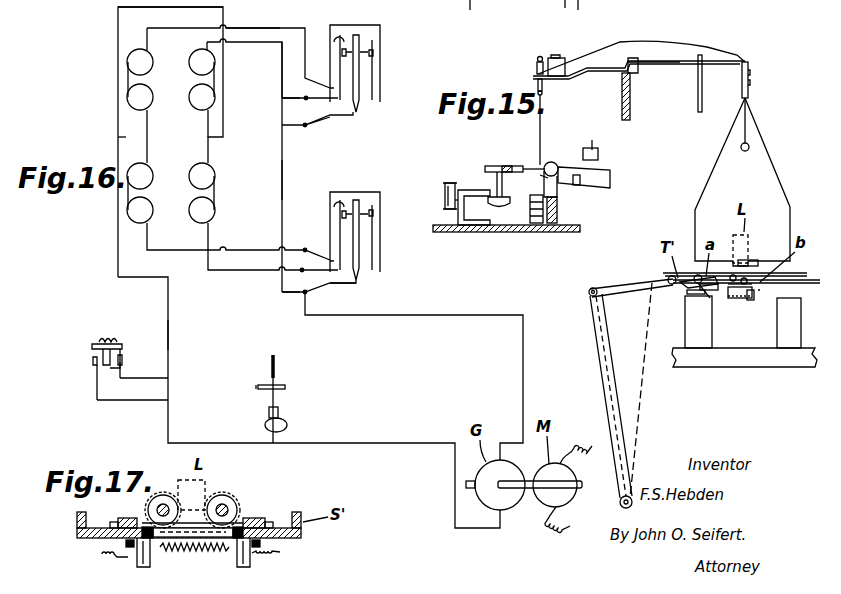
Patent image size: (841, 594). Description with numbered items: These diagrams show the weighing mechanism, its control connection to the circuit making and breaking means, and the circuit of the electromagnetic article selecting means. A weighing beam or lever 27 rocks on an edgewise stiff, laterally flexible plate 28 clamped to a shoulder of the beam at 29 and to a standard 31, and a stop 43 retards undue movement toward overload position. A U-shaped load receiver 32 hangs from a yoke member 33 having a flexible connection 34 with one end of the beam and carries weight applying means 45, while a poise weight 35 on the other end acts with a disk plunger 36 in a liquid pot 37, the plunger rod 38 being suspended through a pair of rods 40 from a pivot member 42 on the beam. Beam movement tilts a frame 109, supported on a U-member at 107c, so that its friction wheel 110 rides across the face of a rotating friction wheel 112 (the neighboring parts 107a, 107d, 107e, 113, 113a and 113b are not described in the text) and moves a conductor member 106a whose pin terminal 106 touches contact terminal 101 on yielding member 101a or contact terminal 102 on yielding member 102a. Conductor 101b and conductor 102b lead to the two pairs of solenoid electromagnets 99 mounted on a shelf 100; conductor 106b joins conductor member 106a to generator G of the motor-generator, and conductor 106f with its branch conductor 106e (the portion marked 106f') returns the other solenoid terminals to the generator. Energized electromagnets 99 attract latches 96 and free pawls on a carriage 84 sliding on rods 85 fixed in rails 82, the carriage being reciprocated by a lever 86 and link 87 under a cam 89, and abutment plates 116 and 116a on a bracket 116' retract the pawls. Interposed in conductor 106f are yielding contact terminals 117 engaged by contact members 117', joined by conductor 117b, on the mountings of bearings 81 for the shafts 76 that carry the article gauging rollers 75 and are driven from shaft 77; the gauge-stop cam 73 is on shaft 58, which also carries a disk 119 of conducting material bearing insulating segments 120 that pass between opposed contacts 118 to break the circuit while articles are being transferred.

In FIG. 16, the electromagnets 99 is at (177, 70).
In FIG. 15, the electromagnets 99 is at (777, 330).
In FIG. 16, the conductor 106f' is at (170, 18).
In FIG. 16, the branch conductor 106e is at (126, 137).
In FIG. 16, the abutment plate 116a is at (253, 15).
In FIG. 15, the abutment plate 116a is at (700, 325).
In FIG. 16, the conductor 102b is at (296, 30).
In FIG. 16, the contact terminal pin 106 is at (362, 42).
In FIG. 16, the contact terminal 101 is at (337, 52).
In FIG. 16, the contact terminal 102 is at (376, 50).
In FIG. 16, the yielding conducting member 102a is at (378, 64).
In FIG. 16, the conductor member 106a is at (358, 90).
In FIG. 16, the yielding conducting member 101a is at (338, 56).
In FIG. 16, the conductor 101b is at (282, 84).
In FIG. 16, the conductor 106b is at (290, 178).
In FIG. 17, the conductor 106b is at (100, 550).
In FIG. 16, the conductor 106f is at (196, 335).
In FIG. 16, the conductor 117b is at (112, 334).
In FIG. 17, the conductor 117b is at (178, 556).
In FIG. 16, the contact members 117' is at (99, 343).
In FIG. 17, the contact members 117' is at (181, 504).
In FIG. 16, the yielding contact terminals 117 is at (99, 361).
In FIG. 17, the yielding contact terminals 117 is at (189, 556).
In FIG. 16, the insulating segments 120 is at (279, 358).
In FIG. 16, the contact maker disk 119 is at (280, 390).
In FIG. 16, the opposed contacts 118 is at (280, 418).
In FIG. 16, the shaft 58 is at (256, 388).
In FIG. 17, the rollers 75 is at (160, 495).
In FIG. 17, the vertical shafts 76 is at (165, 502).
In FIG. 17, the bearings 81 is at (148, 503).
In FIG. 15, the cam 73 is at (458, 11).
In FIG. 15, the rails 82 is at (540, 11).
In FIG. 15, the shaft 77 is at (589, 11).
In FIG. 15, the weighing beam 27 is at (625, 45).
In FIG. 15, the flexible plate 28 is at (640, 76).
In FIG. 15, the beam shoulder clamp 29 is at (632, 58).
In FIG. 15, the poise weight 35 is at (550, 55).
In FIG. 15, the pivot member 42 is at (534, 72).
In FIG. 15, the standard 31 is at (632, 100).
In FIG. 15, the stop 43 is at (703, 90).
In FIG. 15, the flexible connection 34 is at (750, 74).
In FIG. 15, the weight applying means 45 is at (750, 146).
In FIG. 15, the yoke member 33 is at (708, 180).
In FIG. 15, the load receiver 32 is at (753, 262).
In FIG. 15, the rods 40 is at (538, 137).
In FIG. 15, the rods 85 is at (742, 288).
In FIG. 15, the link 87 is at (622, 284).
In FIG. 15, the lever 86 is at (640, 388).
In FIG. 15, the cam 89 is at (648, 438).
In FIG. 15, the carriage 84 is at (684, 274).
In FIG. 15, the abutment plate 116 is at (787, 276).
In FIG. 15, the latches 96 is at (704, 300).
In FIG. 15, the bracket 116' is at (728, 303).
In FIG. 15, the shelf 100 is at (742, 375).
In FIG. 15, the liquid pot 37 is at (560, 222).
In FIG. 15, the spool 113b is at (450, 180).
In FIG. 15, the bracket 113 is at (468, 195).
In FIG. 15, the friction wheel 112 is at (496, 165).
In FIG. 15, the disc 113a is at (497, 205).
In FIG. 15, the plunger rod 38 is at (532, 215).
In FIG. 15, the disk plunger 36 is at (560, 210).
In FIG. 15, the pivot 107a is at (570, 168).
In FIG. 15, the friction wheel 110 is at (545, 168).
In FIG. 15, the stem 107e is at (582, 150).
In FIG. 15, the block 107d is at (602, 162).
In FIG. 15, the frame 109 is at (606, 182).
In FIG. 15, the frame support 107c is at (582, 190).